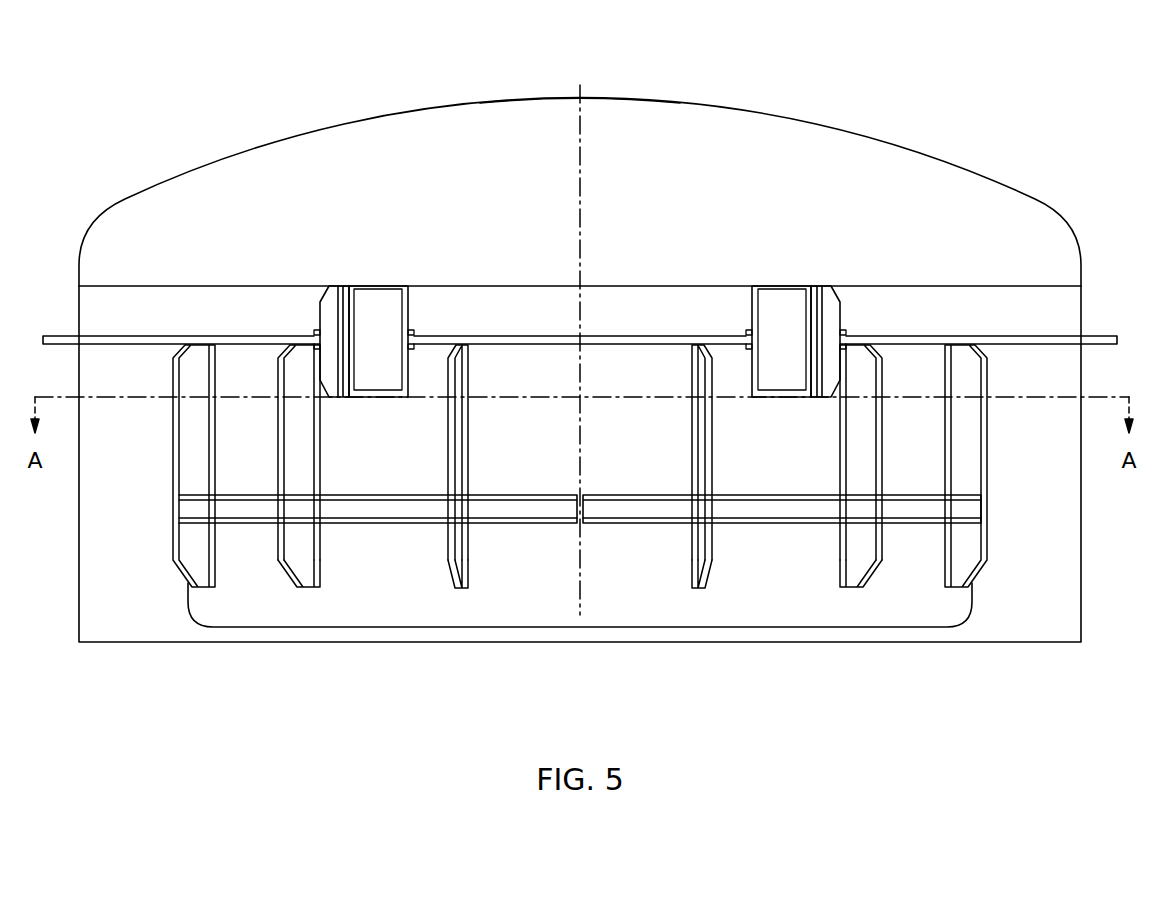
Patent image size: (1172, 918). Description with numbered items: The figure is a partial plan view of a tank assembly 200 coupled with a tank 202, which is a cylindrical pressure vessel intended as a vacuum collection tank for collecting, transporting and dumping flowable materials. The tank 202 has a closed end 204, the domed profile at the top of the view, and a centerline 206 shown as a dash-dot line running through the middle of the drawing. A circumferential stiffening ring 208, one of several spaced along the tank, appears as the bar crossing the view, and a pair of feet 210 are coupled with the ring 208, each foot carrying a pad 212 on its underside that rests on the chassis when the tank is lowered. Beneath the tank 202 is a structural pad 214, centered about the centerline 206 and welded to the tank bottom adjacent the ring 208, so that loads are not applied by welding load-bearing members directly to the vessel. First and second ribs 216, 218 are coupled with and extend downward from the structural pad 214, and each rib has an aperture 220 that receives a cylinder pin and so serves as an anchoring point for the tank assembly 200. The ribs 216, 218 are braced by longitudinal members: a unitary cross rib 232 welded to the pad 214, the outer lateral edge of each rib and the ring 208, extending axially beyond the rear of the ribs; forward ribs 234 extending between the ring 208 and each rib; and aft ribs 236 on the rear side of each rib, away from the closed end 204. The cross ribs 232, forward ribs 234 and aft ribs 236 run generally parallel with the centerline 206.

The tank assembly 200 is at (104, 681).
The tank 202 is at (242, 173).
The closed end 204 is at (675, 104).
The centerline 206 is at (584, 98).
The circumferential stiffening ring 208 is at (1098, 337).
The feet 210 is at (333, 291).
The pads 212 is at (380, 299).
The structural pad 214 is at (687, 628).
The first rib 216 is at (792, 524).
The second rib 218 is at (412, 524).
The aperture 220 is at (356, 524).
The cross rib 232 is at (197, 550).
The forward rib 234 is at (298, 472).
The aft rib 236 is at (303, 560).